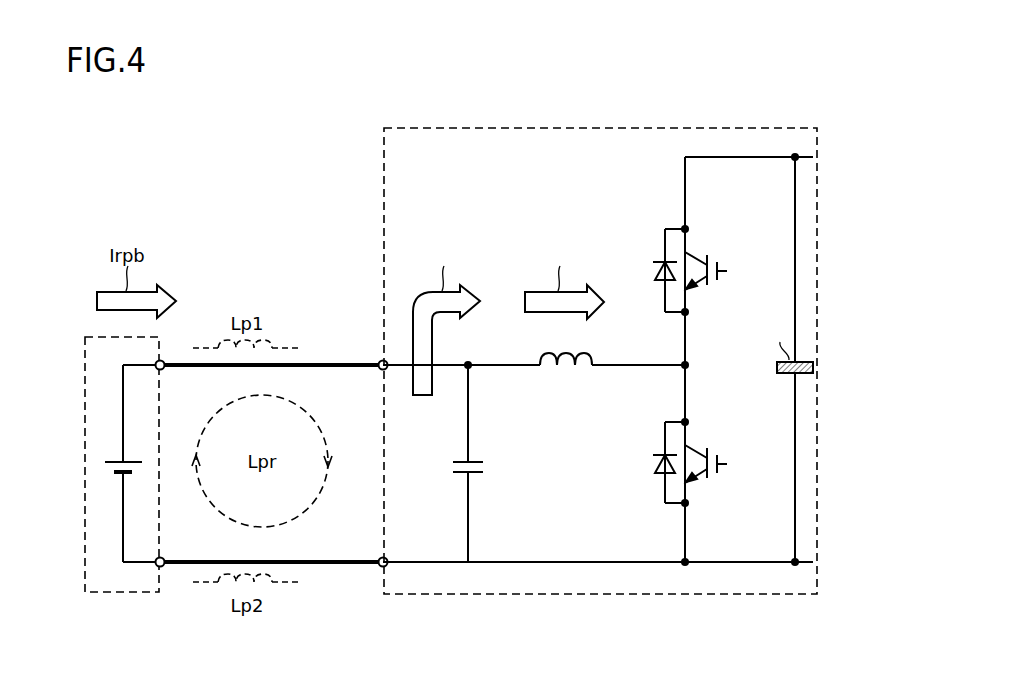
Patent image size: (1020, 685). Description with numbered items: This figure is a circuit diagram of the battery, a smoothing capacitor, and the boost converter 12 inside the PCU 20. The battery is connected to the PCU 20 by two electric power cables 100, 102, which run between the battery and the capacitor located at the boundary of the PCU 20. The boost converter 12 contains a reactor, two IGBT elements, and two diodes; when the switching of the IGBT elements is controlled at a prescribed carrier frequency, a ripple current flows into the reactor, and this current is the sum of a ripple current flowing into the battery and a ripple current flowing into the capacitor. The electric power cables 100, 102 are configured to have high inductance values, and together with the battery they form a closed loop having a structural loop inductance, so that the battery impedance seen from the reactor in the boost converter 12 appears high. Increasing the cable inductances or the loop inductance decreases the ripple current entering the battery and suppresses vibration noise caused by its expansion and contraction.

The PCU 20 is at (486, 128).
The boost converter 12 is at (623, 213).
The electric power cable 100 is at (330, 364).
The electric power cable 102 is at (328, 563).